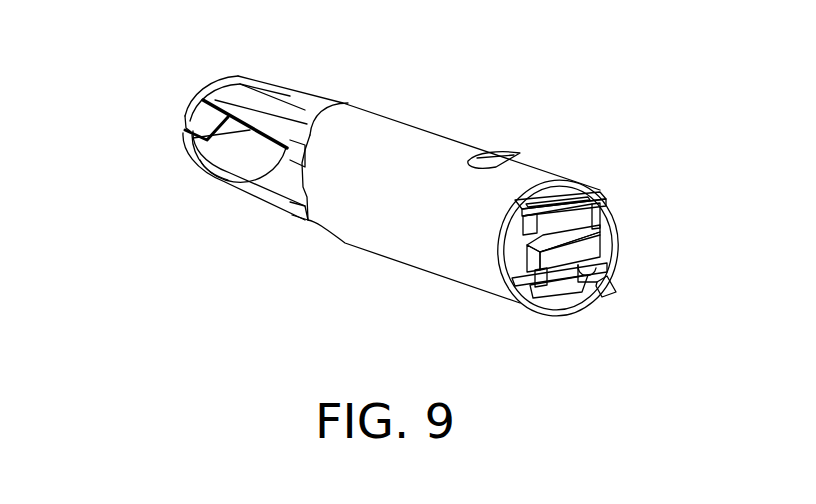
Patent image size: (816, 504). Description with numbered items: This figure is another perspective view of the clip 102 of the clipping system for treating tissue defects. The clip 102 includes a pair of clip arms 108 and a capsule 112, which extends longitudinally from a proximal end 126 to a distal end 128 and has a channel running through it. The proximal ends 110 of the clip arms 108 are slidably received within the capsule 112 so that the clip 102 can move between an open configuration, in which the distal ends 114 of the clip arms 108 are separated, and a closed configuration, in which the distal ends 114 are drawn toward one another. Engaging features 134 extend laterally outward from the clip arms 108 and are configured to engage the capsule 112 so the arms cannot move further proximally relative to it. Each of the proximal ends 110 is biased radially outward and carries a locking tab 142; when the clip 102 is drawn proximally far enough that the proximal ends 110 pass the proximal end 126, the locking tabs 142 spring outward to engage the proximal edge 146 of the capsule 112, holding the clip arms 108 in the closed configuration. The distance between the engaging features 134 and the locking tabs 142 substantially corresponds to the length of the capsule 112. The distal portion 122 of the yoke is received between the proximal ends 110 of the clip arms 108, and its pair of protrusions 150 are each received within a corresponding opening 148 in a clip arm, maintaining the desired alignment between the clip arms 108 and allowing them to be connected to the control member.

The clip 102 is at (473, 78).
The clip arms 108 is at (282, 82).
The proximal ends 110 is at (600, 192).
The capsule 112 is at (410, 137).
The distal ends 114 is at (190, 105).
The distal portion 122 is at (622, 234).
The proximal end 126 is at (547, 182).
The distal end 128 is at (348, 118).
The engaging features 134 is at (278, 205).
The locking tab 142 is at (537, 200).
The proximal edge 146 is at (613, 202).
The opening 148 is at (566, 290).
The protrusions 150 is at (542, 220).